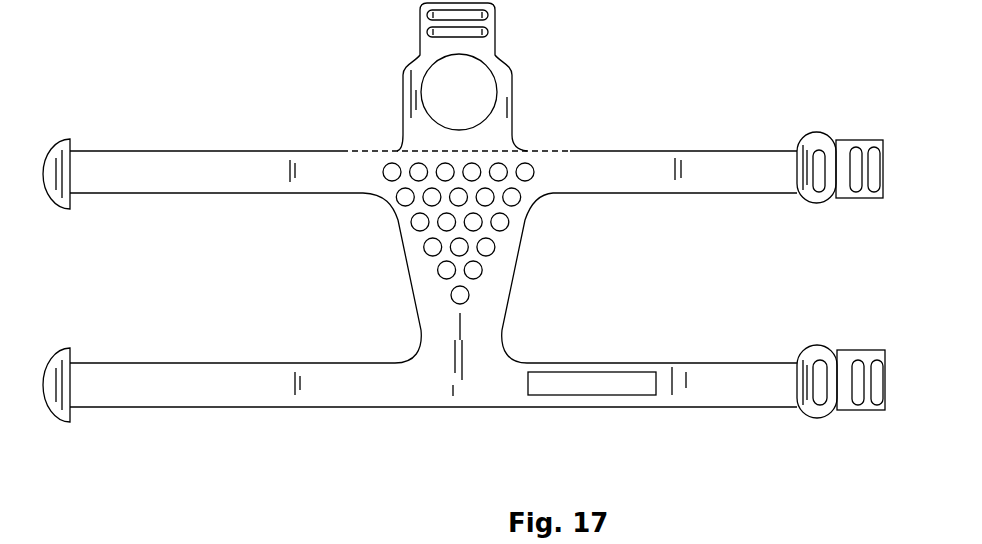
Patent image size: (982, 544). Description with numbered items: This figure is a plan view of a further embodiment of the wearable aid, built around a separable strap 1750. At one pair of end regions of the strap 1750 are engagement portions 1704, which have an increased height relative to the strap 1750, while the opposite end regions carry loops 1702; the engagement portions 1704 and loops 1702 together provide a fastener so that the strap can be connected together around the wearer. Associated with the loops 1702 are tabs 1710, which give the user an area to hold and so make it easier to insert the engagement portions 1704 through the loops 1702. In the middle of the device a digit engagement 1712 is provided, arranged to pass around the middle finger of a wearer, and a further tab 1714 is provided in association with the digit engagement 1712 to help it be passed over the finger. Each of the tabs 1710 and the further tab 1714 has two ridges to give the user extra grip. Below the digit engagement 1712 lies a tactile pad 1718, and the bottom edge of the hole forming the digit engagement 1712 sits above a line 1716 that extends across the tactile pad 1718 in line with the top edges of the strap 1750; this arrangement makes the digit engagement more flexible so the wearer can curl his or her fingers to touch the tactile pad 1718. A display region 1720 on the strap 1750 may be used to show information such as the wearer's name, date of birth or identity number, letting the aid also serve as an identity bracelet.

The loops 1702 is at (820, 203).
The engagement portions 1704 is at (50, 199).
The tabs 1710 is at (853, 140).
The digit engagement 1712 is at (495, 62).
The further tab 1714 is at (430, 15).
The line 1716 is at (403, 151).
The tactile pad 1718 is at (392, 222).
The display region 1720 is at (550, 396).
The strap 1750 is at (137, 151).